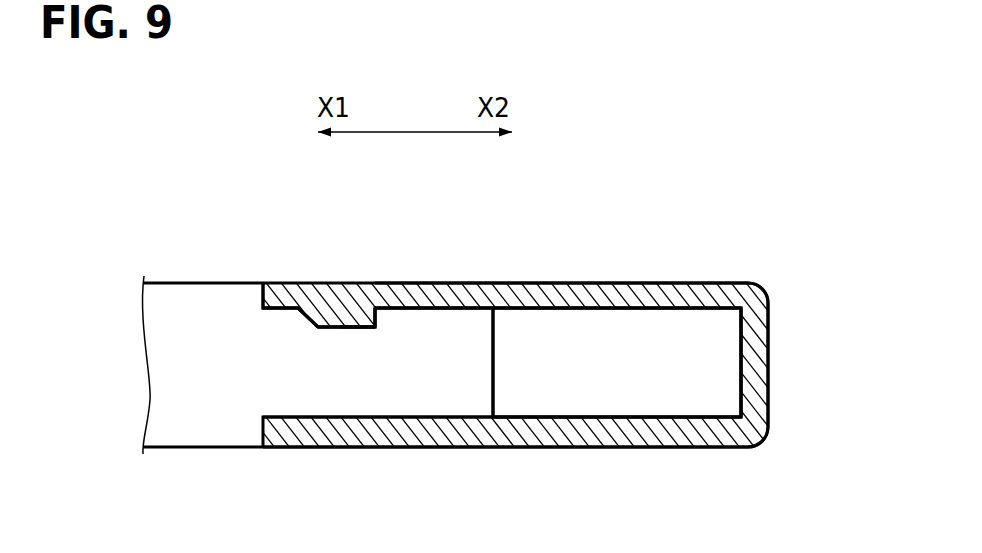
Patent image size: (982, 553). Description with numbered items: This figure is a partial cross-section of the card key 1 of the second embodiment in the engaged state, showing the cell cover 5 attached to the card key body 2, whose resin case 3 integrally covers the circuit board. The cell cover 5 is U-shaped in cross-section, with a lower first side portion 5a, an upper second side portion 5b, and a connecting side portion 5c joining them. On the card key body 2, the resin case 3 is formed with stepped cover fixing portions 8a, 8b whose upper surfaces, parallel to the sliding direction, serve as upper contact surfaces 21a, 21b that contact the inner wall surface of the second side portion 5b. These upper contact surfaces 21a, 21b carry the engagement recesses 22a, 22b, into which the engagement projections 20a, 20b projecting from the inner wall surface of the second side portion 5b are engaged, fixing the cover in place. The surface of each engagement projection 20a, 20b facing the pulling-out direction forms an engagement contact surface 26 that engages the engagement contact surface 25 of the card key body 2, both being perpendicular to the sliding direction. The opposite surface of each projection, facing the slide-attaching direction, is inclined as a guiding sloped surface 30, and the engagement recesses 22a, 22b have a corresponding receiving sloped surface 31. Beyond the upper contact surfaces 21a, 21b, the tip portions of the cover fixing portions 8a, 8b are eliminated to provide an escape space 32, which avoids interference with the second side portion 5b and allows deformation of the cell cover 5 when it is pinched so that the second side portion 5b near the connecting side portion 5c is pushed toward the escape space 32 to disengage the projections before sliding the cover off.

The card key 1 is at (773, 217).
The card key body 2 is at (190, 318).
The resin case 3 is at (195, 276).
The cell cover 5 is at (653, 275).
The first side portion 5a is at (638, 447).
The second side portion 5b is at (548, 282).
The connecting side portion 5c is at (770, 358).
The cover fixing portion 8a is at (503, 413).
The cover fixing portion 8b is at (457, 398).
The engagement projection 20a is at (326, 267).
The engagement projection 20b is at (343, 318).
The upper contact surface 21a is at (453, 257).
The upper contact surface 21b is at (450, 307).
The engagement recess 22a is at (315, 426).
The engagement recess 22b is at (350, 328).
The engagement contact surface 25 is at (365, 328).
The engagement contact surface 26 is at (373, 328).
The guiding sloped surface 30 is at (318, 316).
The receiving sloped surface 31 is at (322, 328).
The escape space 32 is at (578, 353).